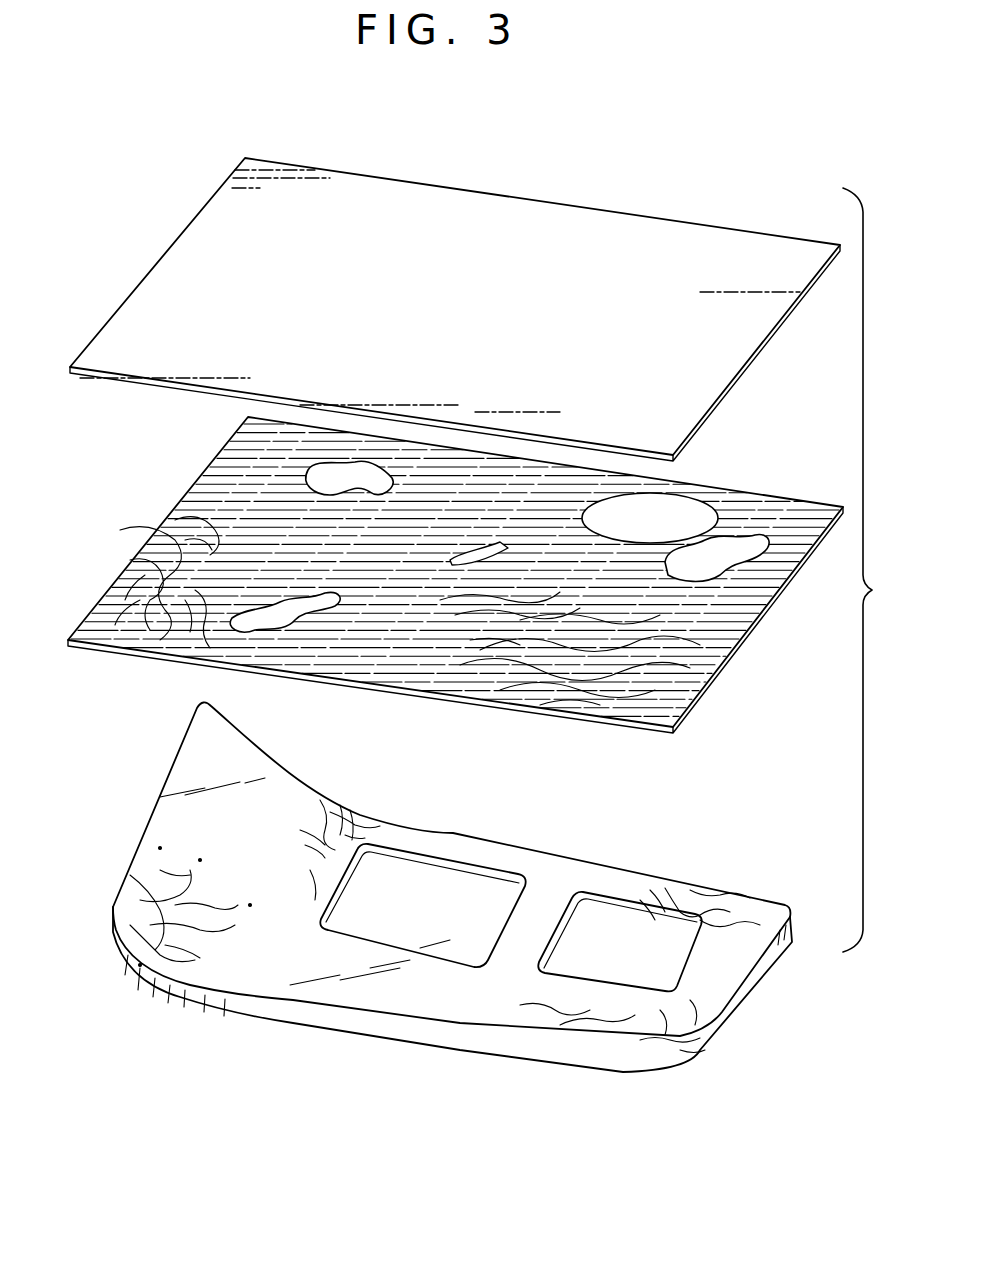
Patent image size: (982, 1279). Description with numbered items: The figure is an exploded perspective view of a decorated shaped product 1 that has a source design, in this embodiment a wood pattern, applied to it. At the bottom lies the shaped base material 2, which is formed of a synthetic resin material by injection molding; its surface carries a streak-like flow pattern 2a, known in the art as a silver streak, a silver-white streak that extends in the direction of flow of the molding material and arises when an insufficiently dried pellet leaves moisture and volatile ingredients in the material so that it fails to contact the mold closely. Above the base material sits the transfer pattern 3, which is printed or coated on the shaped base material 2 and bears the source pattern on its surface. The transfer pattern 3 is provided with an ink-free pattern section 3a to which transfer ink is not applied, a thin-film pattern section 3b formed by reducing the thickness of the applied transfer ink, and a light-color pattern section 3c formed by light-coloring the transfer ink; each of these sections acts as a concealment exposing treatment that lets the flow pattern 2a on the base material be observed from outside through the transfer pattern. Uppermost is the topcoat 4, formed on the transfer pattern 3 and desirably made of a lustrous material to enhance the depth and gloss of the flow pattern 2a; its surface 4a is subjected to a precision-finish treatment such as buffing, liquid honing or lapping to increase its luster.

The decorated shaped product 1 is at (902, 601).
The shaped base material 2 is at (432, 908).
The streak-like flow pattern 2a is at (130, 873).
The transfer pattern 3 is at (455, 586).
The ink-free pattern section 3a is at (320, 600).
The thin-film pattern section 3b is at (682, 512).
The light-color pattern section 3c is at (270, 533).
The topcoat 4 is at (455, 299).
The surface of the topcoat 4a is at (495, 224).